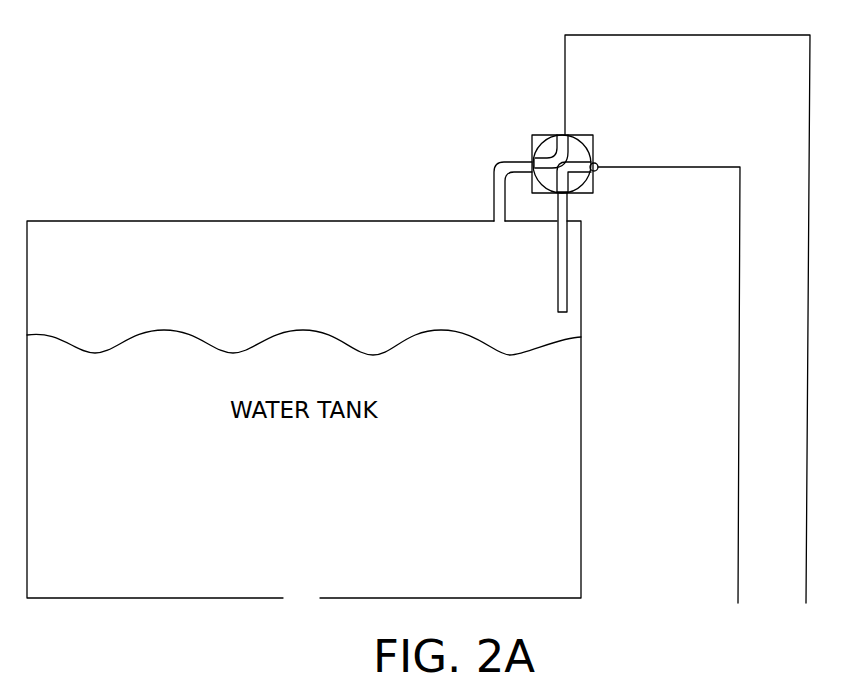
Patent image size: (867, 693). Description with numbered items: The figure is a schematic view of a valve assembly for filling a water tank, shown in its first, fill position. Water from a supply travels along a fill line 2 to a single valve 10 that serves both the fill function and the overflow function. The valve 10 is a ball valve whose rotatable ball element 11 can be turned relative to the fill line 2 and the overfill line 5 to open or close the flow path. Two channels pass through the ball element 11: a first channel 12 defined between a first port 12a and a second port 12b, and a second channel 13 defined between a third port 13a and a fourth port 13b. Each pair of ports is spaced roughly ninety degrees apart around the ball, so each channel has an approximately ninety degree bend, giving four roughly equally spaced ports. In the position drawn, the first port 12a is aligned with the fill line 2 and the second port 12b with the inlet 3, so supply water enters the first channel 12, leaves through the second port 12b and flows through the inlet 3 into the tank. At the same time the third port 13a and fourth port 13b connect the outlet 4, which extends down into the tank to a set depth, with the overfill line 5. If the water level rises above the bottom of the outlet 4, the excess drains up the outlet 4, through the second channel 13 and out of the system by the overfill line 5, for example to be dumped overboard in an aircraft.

The fill line 2 is at (809, 181).
The inlet 3 is at (494, 193).
The outlet 4 is at (563, 276).
The overfill line 5 is at (738, 362).
The valve 10 is at (418, 143).
The rotatable ball element 11 is at (620, 178).
The first channel 12 is at (533, 159).
The first port 12a is at (571, 131).
The second port 12b is at (537, 173).
The second channel 13 is at (549, 225).
The third port 13a is at (592, 192).
The fourth port 13b is at (594, 153).